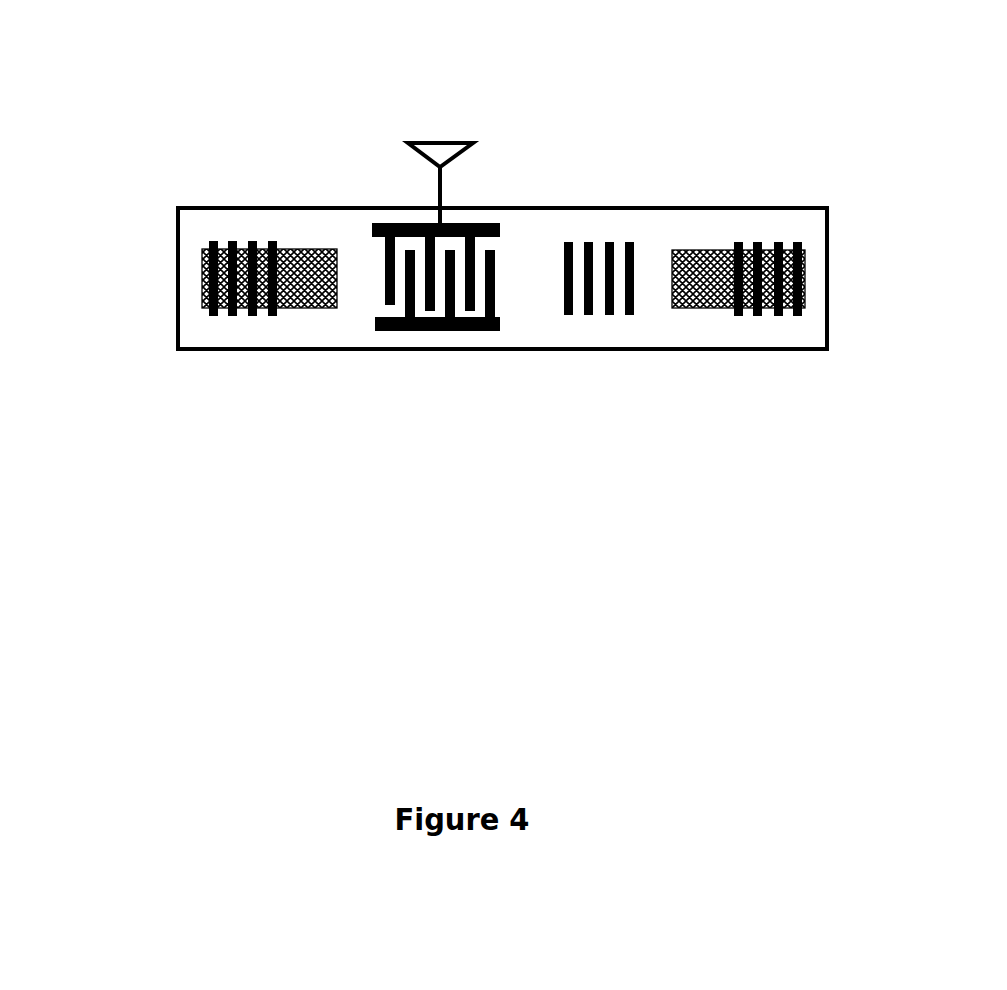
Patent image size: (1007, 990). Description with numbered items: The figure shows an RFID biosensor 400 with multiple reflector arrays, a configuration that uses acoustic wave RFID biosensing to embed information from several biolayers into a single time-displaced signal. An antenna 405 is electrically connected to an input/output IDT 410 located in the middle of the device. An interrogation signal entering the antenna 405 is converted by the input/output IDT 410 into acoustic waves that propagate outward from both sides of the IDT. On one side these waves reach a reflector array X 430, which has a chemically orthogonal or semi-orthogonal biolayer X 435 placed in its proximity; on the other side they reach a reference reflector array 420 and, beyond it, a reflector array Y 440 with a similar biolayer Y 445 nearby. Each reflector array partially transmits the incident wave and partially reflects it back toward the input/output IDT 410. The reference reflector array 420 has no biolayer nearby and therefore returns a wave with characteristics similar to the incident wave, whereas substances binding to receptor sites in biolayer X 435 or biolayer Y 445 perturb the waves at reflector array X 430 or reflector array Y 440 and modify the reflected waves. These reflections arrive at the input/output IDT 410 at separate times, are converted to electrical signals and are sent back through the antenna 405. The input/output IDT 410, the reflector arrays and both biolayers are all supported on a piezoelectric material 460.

The RFID biosensor 400 is at (256, 484).
The antenna 405 is at (431, 118).
The input/output IDT 410 is at (509, 218).
The reference reflector array 420 is at (620, 334).
The reflector array X 430 is at (213, 326).
The biolayer X 435 is at (300, 234).
The reflector array Y 440 is at (794, 331).
The biolayer Y 445 is at (704, 235).
The piezoelectric material 460 is at (346, 344).